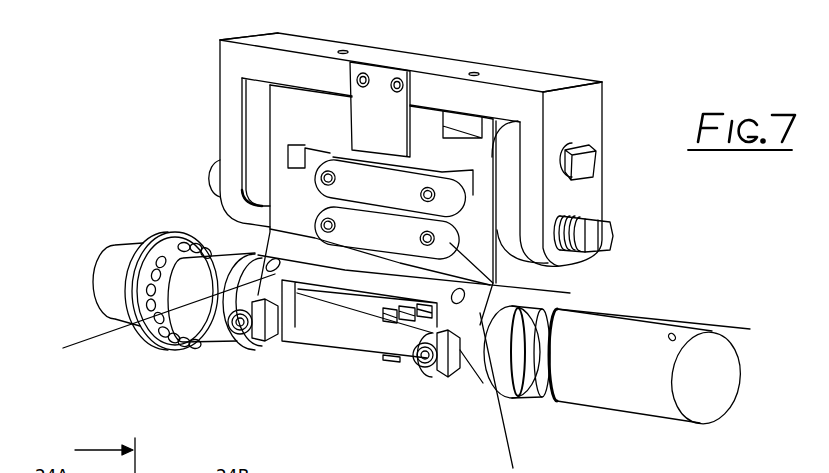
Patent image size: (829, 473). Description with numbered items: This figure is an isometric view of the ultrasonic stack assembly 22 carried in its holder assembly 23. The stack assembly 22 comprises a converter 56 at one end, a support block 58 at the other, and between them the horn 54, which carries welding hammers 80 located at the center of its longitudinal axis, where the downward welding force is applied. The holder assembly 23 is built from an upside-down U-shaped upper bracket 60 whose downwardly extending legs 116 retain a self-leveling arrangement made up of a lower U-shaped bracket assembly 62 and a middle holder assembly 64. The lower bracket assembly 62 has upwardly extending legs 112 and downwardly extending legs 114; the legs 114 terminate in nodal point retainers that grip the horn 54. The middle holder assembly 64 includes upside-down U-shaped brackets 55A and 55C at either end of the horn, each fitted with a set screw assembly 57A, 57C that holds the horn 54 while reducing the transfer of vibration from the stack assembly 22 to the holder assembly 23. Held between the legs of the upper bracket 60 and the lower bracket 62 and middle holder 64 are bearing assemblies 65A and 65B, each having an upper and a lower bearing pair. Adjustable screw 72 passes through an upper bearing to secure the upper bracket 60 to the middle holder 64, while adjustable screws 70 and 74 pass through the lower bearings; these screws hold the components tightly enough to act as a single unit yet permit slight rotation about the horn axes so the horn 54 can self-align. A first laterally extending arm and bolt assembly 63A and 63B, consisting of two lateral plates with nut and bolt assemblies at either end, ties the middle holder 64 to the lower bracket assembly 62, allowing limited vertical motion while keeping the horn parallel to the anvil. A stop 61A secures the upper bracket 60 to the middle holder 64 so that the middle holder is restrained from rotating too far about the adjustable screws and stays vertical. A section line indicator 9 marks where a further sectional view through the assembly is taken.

The upper U-shaped bracket 60 is at (321, 50).
The stop 61A is at (380, 78).
The first laterally extending arm and bolt assembly 63A is at (413, 187).
The first laterally extending arm and bolt assembly 63B is at (495, 304).
The holder assembly 23 is at (540, 64).
The downwardly extending legs 116 is at (585, 123).
The adjustable screw 72 is at (592, 167).
The adjustable screw 74 is at (607, 240).
The bearing assembly 65A is at (253, 152).
The bearing assembly 65B is at (507, 198).
The middle holder assembly 64 is at (295, 118).
The adjustable screw 70 is at (218, 167).
The upwardly extending legs 112 is at (312, 167).
The lower U-shaped bracket assembly 62 is at (293, 209).
The converter 56 is at (133, 260).
The support block 58 is at (637, 332).
The downwardly extending legs 114 is at (410, 325).
The upside-down U-shaped bracket 55A is at (288, 328).
The upside-down U-shaped bracket 55C is at (493, 390).
The set screw assembly 57A is at (238, 348).
The set screw assembly 57C is at (418, 362).
The horn 54 is at (334, 338).
The hammers 80 is at (395, 365).
The stack assembly 22 is at (603, 419).
The section line 9 is at (114, 455).